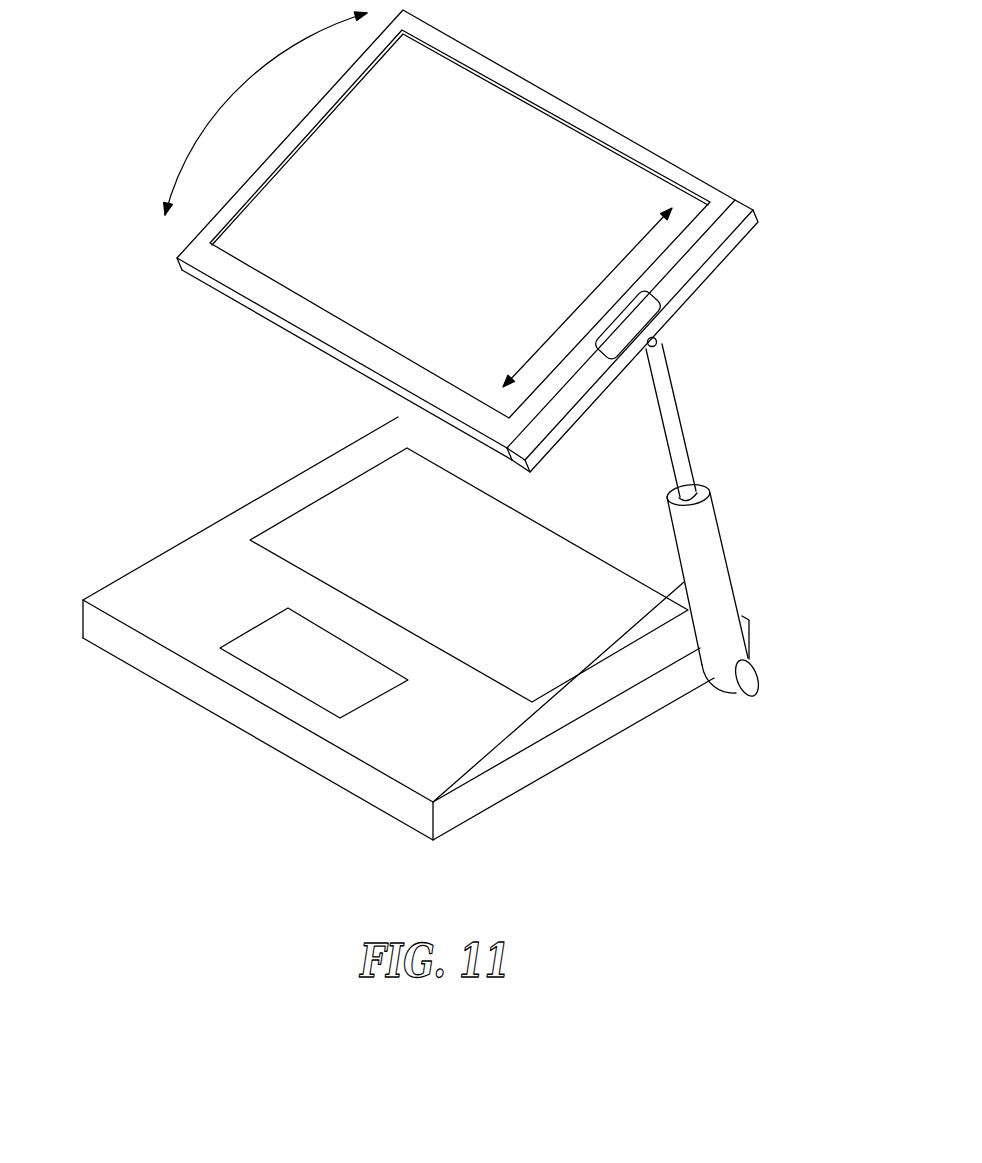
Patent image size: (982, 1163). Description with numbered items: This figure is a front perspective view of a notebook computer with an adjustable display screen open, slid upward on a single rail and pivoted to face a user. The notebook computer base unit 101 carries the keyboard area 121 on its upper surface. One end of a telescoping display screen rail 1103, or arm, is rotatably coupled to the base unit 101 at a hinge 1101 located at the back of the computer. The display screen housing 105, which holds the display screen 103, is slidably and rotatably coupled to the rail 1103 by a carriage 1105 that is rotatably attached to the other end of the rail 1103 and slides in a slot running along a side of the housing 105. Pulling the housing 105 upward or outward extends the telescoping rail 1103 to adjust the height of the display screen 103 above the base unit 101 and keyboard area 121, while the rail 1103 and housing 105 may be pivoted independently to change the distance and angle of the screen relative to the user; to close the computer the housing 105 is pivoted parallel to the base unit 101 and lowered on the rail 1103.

The notebook computer base unit 101 is at (402, 628).
The notebook computer display screen 103 is at (453, 201).
The display screen housing 105 is at (467, 241).
The keyboard area 121 is at (479, 581).
The hinge 1101 is at (752, 703).
The telescoping display screen rail 1103 is at (734, 513).
The carriage 1105 is at (672, 333).